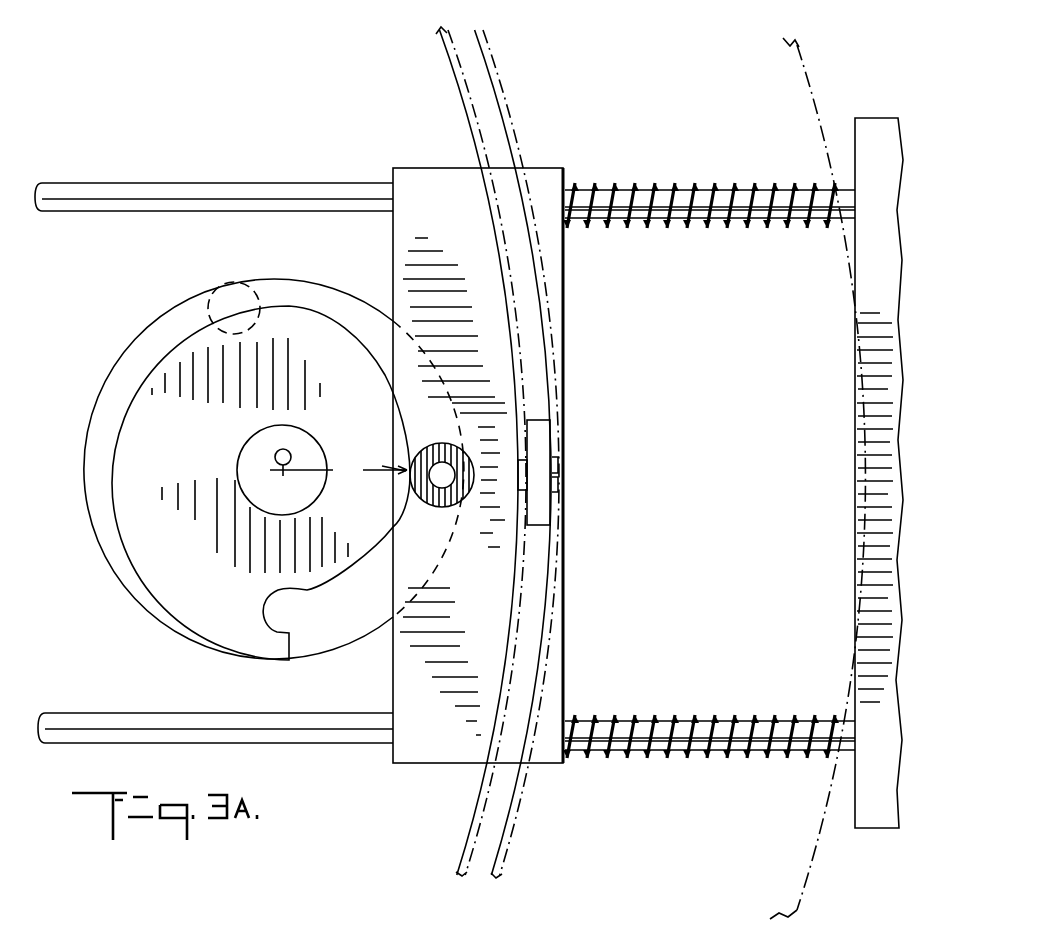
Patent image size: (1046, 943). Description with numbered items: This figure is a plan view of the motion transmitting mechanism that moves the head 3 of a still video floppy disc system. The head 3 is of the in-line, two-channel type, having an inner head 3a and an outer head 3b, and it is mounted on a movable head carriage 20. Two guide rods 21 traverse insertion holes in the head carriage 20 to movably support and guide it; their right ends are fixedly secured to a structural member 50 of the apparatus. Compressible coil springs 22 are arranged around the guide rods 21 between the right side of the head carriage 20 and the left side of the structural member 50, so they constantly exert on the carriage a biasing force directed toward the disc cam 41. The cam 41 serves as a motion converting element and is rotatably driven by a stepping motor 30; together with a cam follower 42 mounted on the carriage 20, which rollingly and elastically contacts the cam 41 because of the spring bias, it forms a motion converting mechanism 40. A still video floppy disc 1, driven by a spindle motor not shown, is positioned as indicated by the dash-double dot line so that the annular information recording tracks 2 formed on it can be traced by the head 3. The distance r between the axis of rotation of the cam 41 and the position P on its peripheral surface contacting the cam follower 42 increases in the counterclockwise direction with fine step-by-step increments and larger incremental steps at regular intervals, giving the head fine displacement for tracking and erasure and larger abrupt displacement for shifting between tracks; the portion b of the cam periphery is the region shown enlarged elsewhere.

The still video floppy disc 1 is at (815, 100).
The annular information recording tracks 2 is at (473, 137).
The head 3 is at (563, 488).
The inner head 3a is at (520, 488).
The outer head 3b is at (563, 468).
The head carriage 20 is at (560, 280).
The guide rods 21 is at (358, 212).
The compressible coil springs 22 is at (748, 228).
The stepping motor 30 is at (138, 330).
The motion converting mechanism 40 is at (192, 446).
The disc cam 41 is at (155, 586).
The cam follower 42 is at (465, 505).
The structural member 50 is at (875, 828).
The portion b is at (220, 290).
The distance r is at (338, 470).
The position P is at (389, 456).